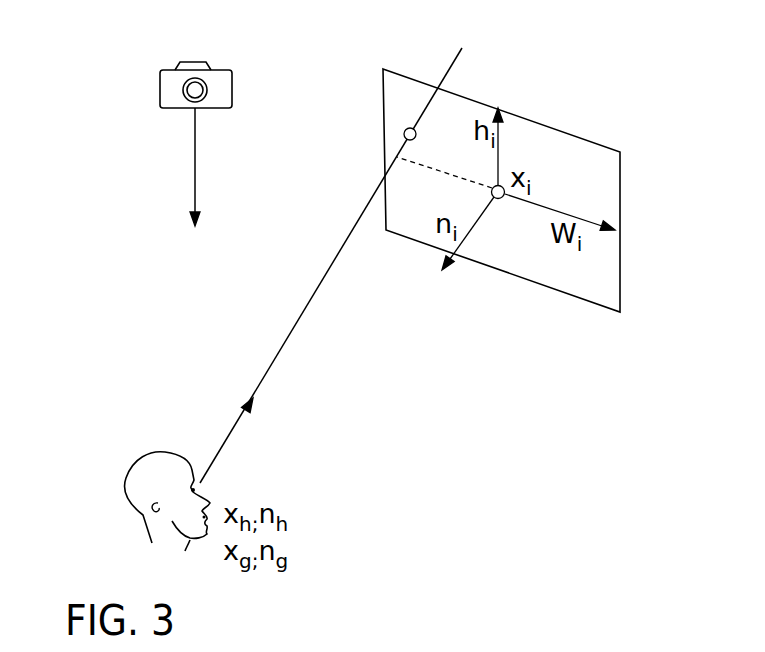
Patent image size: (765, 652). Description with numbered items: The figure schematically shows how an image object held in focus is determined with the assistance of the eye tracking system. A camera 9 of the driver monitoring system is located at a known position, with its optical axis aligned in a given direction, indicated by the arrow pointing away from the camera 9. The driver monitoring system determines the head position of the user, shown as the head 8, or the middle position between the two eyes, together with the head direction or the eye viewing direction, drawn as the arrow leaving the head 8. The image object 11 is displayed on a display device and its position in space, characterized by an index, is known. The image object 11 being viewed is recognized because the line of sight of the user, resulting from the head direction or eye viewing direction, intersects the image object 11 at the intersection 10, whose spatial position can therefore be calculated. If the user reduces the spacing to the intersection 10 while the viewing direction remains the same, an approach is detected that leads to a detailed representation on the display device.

The head of user 8 is at (152, 465).
The camera 9 is at (169, 77).
The intersection 10 is at (403, 132).
The image object 11 is at (616, 280).